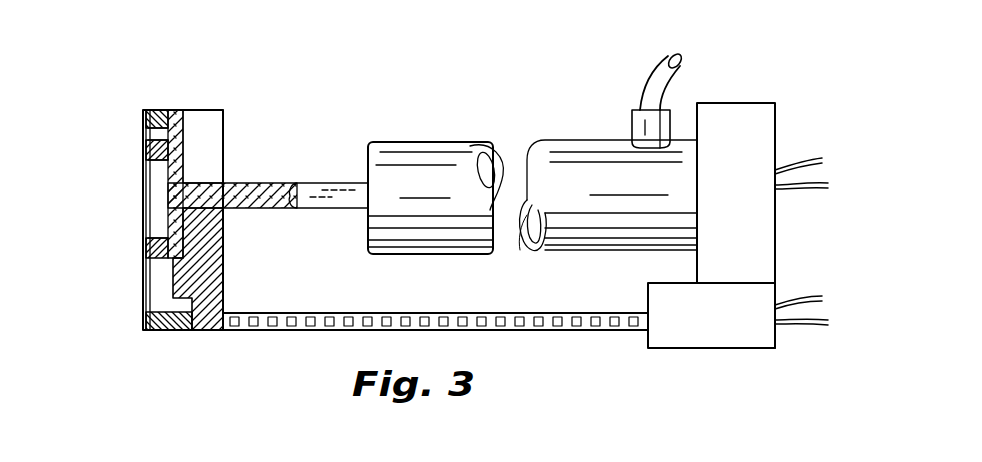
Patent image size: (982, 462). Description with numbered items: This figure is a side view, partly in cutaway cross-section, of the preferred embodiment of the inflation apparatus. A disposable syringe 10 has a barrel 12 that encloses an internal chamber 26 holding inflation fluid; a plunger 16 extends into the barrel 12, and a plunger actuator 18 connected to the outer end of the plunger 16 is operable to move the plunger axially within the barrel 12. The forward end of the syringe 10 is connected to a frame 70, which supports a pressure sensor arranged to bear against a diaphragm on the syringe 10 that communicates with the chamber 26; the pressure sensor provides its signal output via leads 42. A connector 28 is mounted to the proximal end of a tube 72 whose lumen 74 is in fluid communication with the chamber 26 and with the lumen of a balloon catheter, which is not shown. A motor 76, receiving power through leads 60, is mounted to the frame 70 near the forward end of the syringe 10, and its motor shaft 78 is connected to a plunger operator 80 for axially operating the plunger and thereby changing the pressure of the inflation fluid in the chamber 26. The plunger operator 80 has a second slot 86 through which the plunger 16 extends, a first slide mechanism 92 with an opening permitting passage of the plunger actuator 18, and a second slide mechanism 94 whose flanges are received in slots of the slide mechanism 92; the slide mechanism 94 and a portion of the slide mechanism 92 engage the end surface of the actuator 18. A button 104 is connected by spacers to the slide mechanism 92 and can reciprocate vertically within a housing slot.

The syringe 10 is at (420, 140).
The barrel 12 is at (568, 252).
The plunger 16 is at (335, 183).
The plunger actuator 18 is at (183, 150).
The internal chamber 26 is at (527, 232).
The connector 28 is at (632, 125).
The leads 42 is at (793, 188).
The leads 60 is at (808, 325).
The frame 70 is at (778, 122).
The tube 72 is at (645, 72).
The lumen 74 is at (682, 60).
The motor 76 is at (680, 350).
The motor shaft 78 is at (347, 313).
The plunger operator 80 is at (200, 330).
The second slot 86 is at (155, 110).
The first slide mechanism 92 is at (146, 150).
The second slide mechanism 94 is at (146, 248).
The button 104 is at (146, 322).